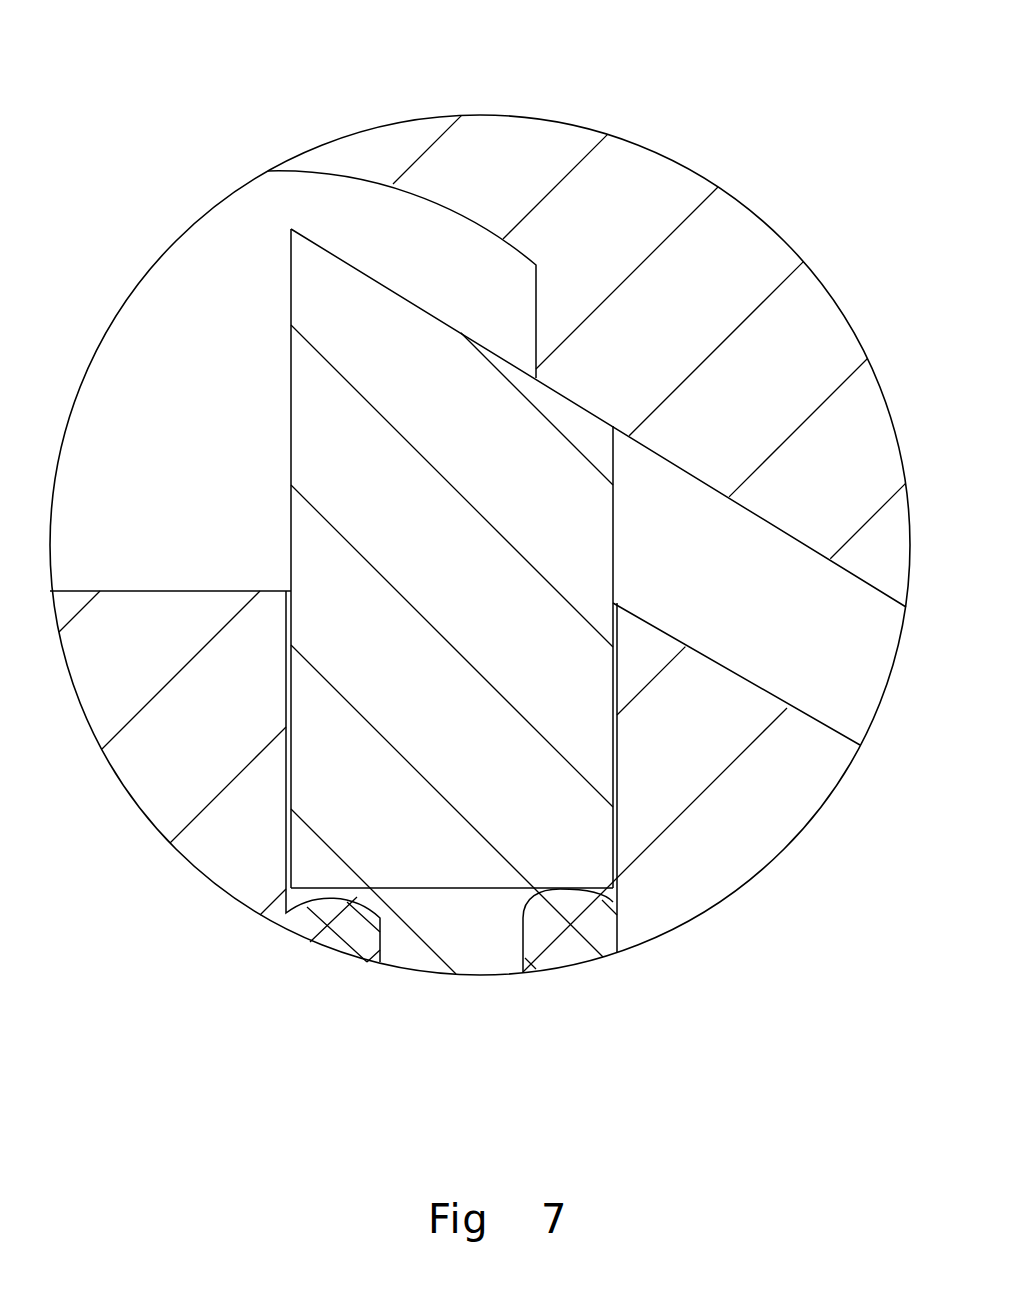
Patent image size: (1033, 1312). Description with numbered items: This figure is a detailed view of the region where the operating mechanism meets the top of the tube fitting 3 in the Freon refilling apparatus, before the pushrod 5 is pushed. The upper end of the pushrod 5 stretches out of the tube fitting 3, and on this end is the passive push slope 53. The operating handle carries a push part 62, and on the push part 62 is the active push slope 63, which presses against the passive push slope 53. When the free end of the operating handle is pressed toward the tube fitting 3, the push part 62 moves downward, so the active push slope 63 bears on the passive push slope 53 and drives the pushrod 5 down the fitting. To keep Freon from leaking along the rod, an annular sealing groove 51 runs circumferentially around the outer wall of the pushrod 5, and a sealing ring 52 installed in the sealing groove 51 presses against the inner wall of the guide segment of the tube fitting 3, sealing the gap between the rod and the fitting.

The tube fitting 3 is at (192, 747).
The pushrod 5 is at (455, 648).
The sealing groove 51 is at (584, 888).
The sealing ring 52 is at (572, 927).
The passive push slope 53 is at (414, 306).
The push part 62 is at (715, 420).
The active push slope 63 is at (762, 517).